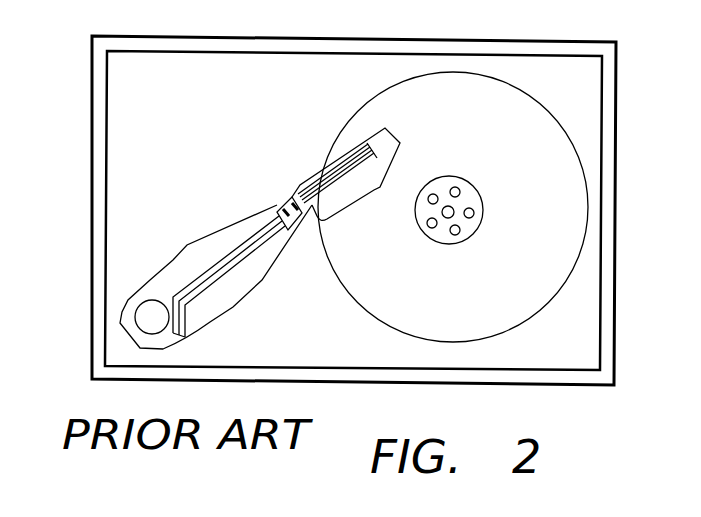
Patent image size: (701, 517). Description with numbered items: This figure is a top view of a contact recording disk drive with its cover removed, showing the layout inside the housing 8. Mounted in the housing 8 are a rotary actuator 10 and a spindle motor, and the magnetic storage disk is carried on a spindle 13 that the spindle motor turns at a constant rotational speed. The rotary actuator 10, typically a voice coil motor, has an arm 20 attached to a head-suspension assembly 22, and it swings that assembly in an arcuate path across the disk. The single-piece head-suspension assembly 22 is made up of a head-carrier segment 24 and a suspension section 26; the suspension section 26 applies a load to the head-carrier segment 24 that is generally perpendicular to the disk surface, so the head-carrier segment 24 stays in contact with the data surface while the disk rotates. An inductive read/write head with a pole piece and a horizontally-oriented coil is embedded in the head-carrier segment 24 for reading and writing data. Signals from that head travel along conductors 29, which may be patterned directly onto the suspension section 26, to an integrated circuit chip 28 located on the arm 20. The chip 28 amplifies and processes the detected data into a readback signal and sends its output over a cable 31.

The housing 8 is at (615, 127).
The rotary actuator 10 is at (151, 334).
The spindle 13 is at (481, 196).
The arm 20 is at (187, 242).
The head-suspension assembly 22 is at (150, 280).
The head-carrier segment 24 is at (381, 131).
The suspension section 26 is at (340, 160).
The integrated circuit chip 28 is at (278, 203).
The conductors 29 is at (313, 183).
The cable 31 is at (204, 322).